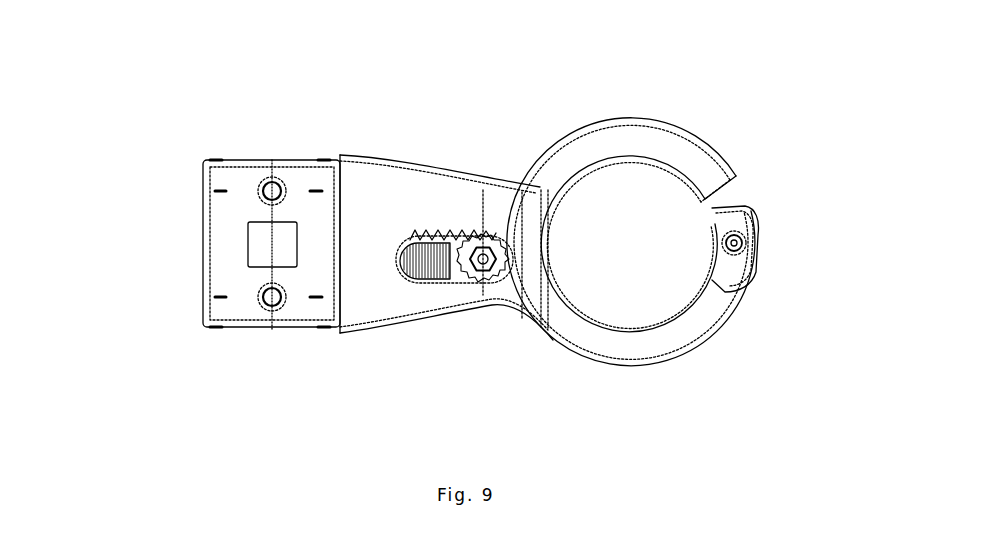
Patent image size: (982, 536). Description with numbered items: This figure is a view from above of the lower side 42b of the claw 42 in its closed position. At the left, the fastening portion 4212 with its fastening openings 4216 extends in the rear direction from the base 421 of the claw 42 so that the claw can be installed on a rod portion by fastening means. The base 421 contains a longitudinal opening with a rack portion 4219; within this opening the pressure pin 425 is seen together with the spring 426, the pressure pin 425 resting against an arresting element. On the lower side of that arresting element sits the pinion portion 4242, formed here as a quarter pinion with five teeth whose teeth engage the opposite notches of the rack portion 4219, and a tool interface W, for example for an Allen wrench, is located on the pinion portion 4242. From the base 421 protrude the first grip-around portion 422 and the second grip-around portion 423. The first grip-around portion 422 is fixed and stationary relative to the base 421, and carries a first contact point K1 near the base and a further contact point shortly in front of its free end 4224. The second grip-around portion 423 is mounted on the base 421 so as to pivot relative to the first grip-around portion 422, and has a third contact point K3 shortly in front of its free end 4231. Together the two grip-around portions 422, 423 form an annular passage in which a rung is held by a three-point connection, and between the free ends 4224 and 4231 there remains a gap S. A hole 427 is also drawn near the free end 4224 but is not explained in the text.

The claw 42 is at (133, 44).
The base 421 is at (328, 352).
The fastening portion 4212 is at (235, 280).
The fastening openings 4216 is at (268, 182).
The lower side 42b is at (497, 208).
The rack portion 4219 is at (424, 230).
The pinion portion 4242 is at (462, 230).
The spring 426 is at (418, 263).
The pressure pin 425 is at (447, 275).
The tool interface W is at (488, 282).
The first contact point K1 is at (557, 263).
The third contact point K3 is at (645, 168).
The first grip-around portion 422 is at (705, 354).
The second grip-around portion 423 is at (675, 130).
The free end of the second grip-around portion 4231 is at (718, 168).
The gap S is at (740, 202).
The free end of the first grip-around portion 4224 is at (745, 230).
The pivot hole 427 is at (735, 244).